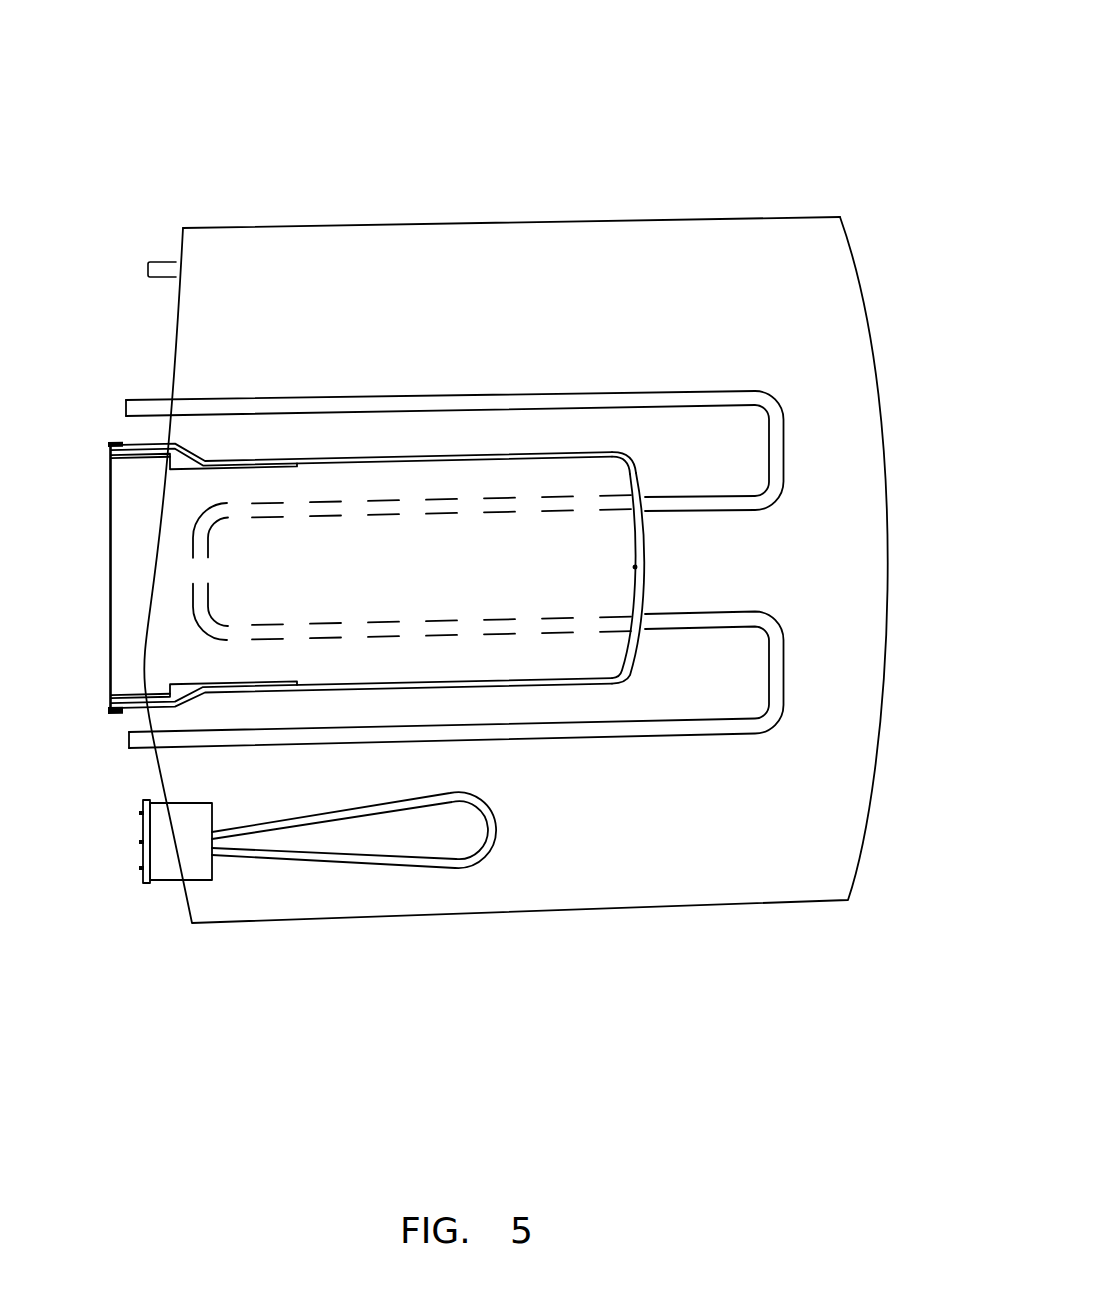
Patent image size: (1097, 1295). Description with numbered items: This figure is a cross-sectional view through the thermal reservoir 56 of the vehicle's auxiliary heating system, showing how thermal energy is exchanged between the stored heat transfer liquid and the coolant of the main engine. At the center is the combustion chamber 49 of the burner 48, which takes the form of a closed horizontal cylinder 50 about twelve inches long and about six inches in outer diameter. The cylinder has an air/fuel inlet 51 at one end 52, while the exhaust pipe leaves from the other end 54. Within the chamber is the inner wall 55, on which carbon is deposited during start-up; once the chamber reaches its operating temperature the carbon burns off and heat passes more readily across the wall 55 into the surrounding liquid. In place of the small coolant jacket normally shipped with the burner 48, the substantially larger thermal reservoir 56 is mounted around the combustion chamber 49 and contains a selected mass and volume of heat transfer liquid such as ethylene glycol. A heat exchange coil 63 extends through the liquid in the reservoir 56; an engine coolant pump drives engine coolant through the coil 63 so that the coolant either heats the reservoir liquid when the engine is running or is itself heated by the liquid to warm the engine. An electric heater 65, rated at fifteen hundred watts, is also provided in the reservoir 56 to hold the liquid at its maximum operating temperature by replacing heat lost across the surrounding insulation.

The burner 48 is at (840, 217).
The thermal reservoir 56 is at (397, 225).
The coil 63 is at (258, 398).
The closed horizontal cylinder 50 is at (337, 457).
The combustion chamber 49 is at (638, 469).
The other end 54 is at (645, 593).
The inner wall 55 is at (355, 680).
The air/fuel inlet 51 is at (116, 625).
The one end 52 is at (108, 443).
The electric heater 65 is at (530, 817).